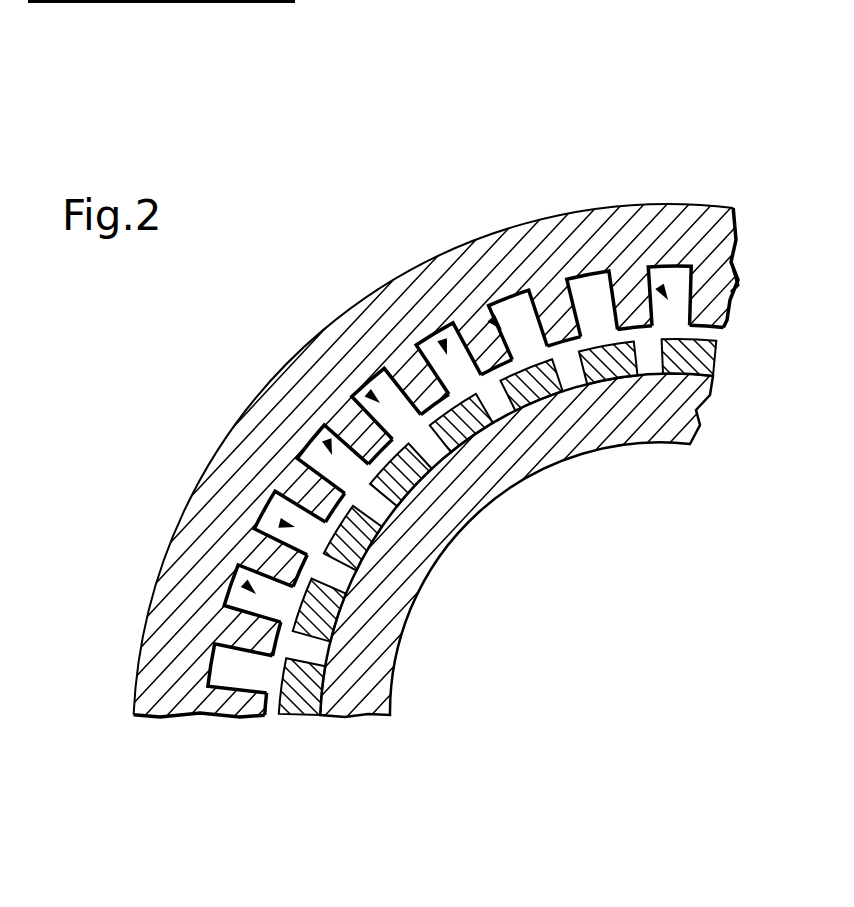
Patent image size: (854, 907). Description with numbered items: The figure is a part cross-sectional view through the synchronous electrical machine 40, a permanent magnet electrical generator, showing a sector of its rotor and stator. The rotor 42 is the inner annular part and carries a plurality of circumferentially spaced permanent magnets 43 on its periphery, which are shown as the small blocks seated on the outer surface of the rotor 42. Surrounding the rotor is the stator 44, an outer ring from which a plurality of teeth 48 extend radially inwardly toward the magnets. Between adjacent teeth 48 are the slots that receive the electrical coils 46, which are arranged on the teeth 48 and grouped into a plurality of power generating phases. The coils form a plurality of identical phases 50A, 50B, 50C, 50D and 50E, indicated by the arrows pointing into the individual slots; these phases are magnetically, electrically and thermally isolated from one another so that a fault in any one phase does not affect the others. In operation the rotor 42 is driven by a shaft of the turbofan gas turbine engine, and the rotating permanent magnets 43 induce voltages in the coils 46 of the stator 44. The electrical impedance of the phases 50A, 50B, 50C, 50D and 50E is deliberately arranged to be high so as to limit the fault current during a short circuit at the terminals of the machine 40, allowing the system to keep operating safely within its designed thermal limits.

The synchronous electrical machine 40 is at (477, 159).
The rotor 42 is at (563, 432).
The permanent magnets 43 is at (507, 397).
The stator 44 is at (372, 312).
The electrical coils 46 is at (680, 283).
The teeth 48 is at (712, 310).
The phase 50A is at (735, 270).
The phase 50B is at (660, 286).
The phase 50C is at (491, 318).
The phase 50D is at (327, 440).
The phase 50E is at (280, 523).